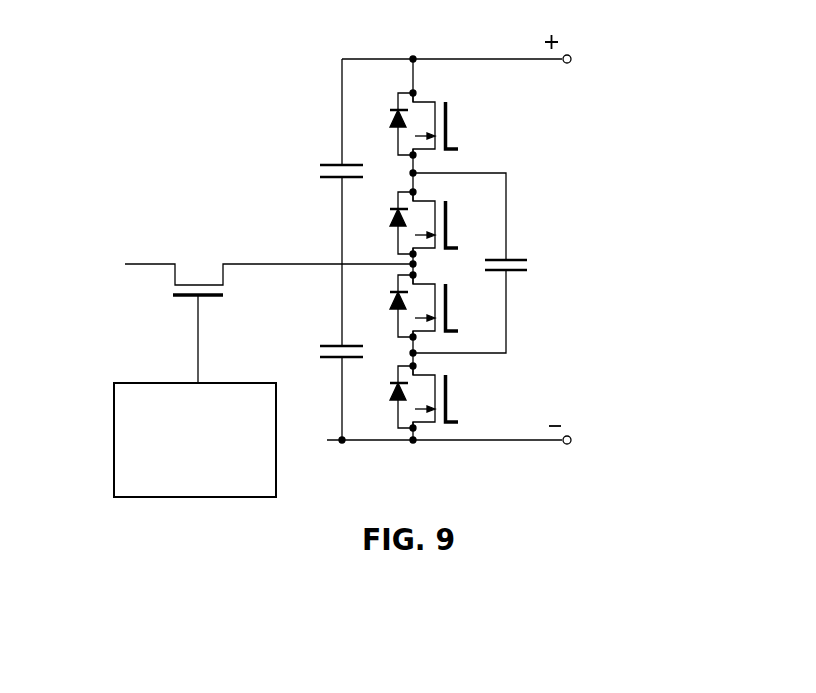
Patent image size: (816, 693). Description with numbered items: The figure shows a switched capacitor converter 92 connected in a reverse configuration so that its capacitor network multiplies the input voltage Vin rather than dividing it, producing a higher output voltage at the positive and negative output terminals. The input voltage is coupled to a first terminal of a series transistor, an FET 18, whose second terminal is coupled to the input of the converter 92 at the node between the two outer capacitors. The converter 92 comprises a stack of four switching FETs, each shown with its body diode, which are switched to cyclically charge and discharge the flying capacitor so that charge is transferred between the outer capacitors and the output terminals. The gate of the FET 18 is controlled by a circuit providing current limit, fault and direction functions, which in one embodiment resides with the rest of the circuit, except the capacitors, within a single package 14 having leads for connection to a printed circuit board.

The switched capacitor converter 92 is at (622, 81).
The FET 18 is at (198, 272).
The package 14 is at (134, 350).